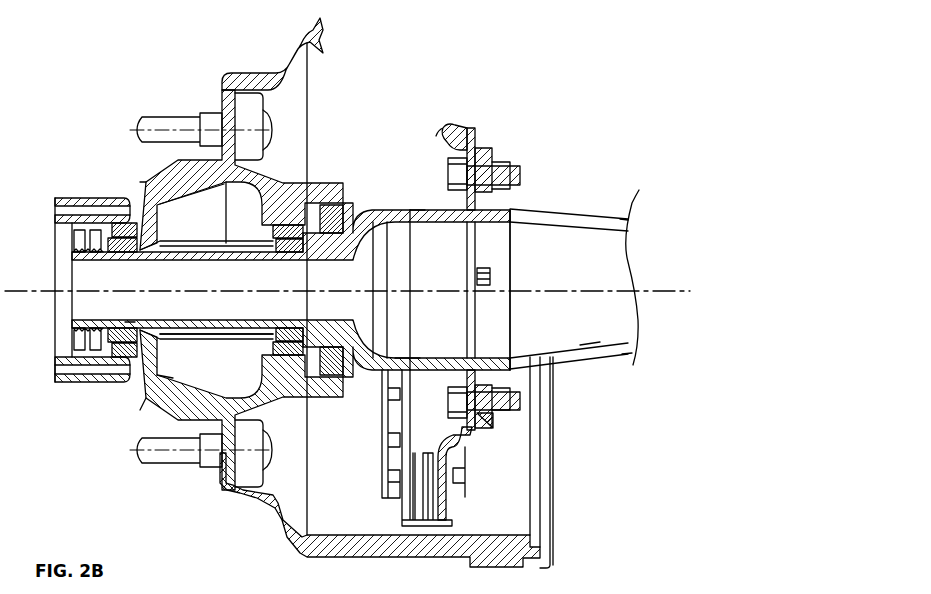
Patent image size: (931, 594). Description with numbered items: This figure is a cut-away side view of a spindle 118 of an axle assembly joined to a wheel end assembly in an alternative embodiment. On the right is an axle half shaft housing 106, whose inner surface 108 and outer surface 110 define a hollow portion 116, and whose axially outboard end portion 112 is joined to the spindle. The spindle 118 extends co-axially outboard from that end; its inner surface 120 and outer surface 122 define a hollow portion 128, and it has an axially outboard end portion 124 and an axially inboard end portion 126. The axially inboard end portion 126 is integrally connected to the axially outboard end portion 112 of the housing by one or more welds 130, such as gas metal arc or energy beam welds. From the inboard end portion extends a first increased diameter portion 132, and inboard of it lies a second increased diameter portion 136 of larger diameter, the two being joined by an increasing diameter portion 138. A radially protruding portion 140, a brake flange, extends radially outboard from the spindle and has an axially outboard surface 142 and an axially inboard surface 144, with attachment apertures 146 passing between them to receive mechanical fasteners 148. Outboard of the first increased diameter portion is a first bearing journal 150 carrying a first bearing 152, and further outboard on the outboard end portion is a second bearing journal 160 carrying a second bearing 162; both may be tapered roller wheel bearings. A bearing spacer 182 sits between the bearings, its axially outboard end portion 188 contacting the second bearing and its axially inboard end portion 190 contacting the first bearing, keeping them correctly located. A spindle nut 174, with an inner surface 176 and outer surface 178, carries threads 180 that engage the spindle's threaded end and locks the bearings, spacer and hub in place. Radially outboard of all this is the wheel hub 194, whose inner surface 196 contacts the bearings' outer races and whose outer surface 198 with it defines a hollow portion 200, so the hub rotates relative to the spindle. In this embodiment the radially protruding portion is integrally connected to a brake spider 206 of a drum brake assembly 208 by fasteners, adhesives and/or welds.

The axle half shaft housing 106 is at (618, 218).
The inner surface 108 is at (594, 335).
The outer surface 110 is at (632, 360).
The axially outboard end portion 112 is at (640, 358).
The hollow portion 116 is at (617, 242).
The spindle 118 is at (378, 209).
The inner surface 120 is at (213, 321).
The outer surface 122 is at (192, 336).
The axially outboard end portion 124 is at (135, 297).
The axially inboard end portion 126 is at (407, 355).
The hollow portion 128 is at (90, 267).
The weld 130 is at (512, 248).
The first increased diameter portion 132 is at (334, 234).
The second increased diameter portion 136 is at (418, 208).
The increasing diameter portion 138 is at (367, 368).
The radially protruding portion 140 is at (493, 430).
The axially outboard surface 142 is at (473, 145).
The axially inboard surface 144 is at (493, 157).
The attachment aperture 146 is at (507, 412).
The mechanical fastener 148 is at (522, 404).
The first bearing journal 150 is at (288, 254).
The first bearing 152 is at (314, 305).
The second bearing journal 160 is at (120, 257).
The second bearing 162 is at (138, 194).
The spindle nut 174 is at (72, 342).
The inner surface 176 is at (72, 254).
The outer surface 178 is at (78, 230).
The threads 180 is at (72, 319).
The bearing spacer 182 is at (208, 240).
The axially outboard end portion 188 is at (182, 242).
The axially inboard end portion 190 is at (243, 242).
The wheel hub 194 is at (165, 173).
The inner surface 196 is at (157, 368).
The outer surface 198 is at (157, 417).
The hollow portion 200 is at (173, 378).
The brake spider 206 is at (467, 133).
The drum brake assembly 208 is at (255, 526).